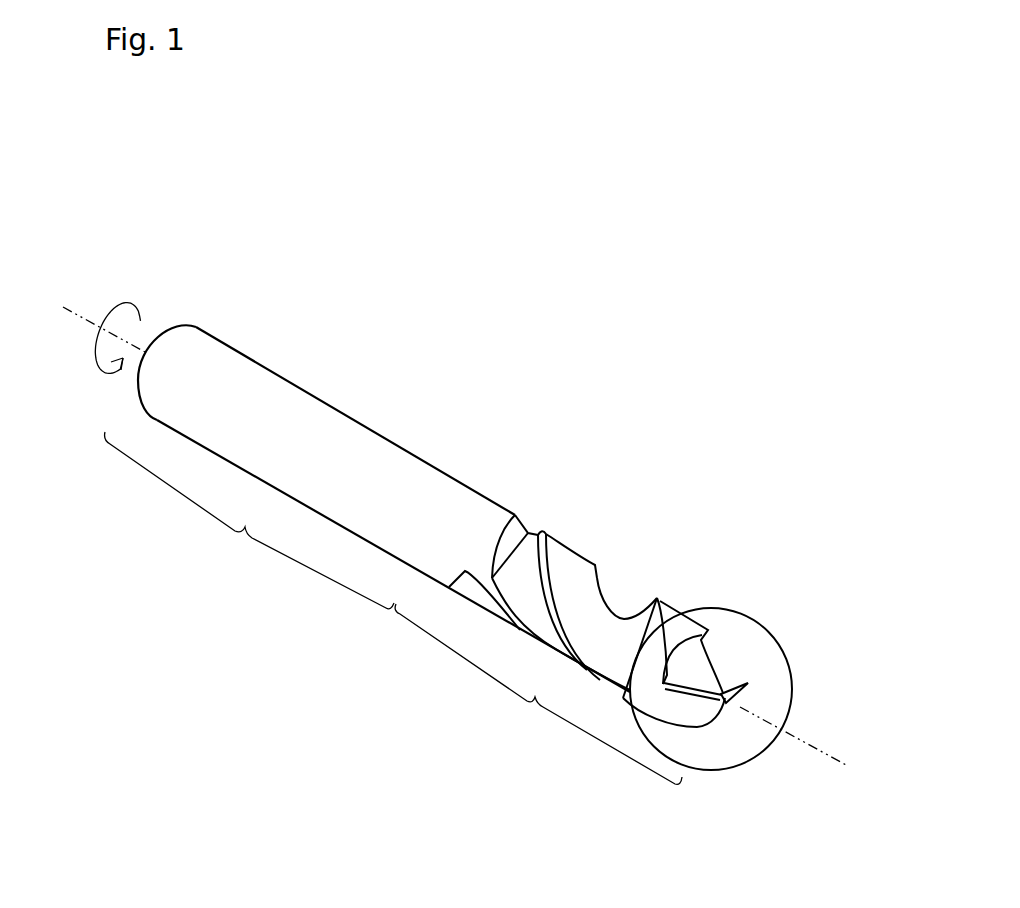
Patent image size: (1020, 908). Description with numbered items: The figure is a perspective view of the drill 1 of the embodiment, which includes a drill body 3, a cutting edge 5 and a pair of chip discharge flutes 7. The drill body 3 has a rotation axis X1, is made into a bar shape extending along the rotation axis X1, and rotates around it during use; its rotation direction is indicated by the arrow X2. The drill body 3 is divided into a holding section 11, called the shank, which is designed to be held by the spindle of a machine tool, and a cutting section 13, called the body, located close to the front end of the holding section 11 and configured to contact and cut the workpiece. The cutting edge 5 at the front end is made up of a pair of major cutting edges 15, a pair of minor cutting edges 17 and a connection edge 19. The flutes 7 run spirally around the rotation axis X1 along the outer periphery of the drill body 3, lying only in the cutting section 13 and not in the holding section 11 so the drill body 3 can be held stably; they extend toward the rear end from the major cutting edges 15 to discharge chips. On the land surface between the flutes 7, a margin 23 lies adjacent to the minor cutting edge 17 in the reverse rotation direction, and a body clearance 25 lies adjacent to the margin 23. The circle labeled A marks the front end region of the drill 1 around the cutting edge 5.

The drill 1 is at (410, 328).
The drill body 3 is at (393, 608).
The holding section 11 is at (249, 520).
The cutting section 13 is at (538, 694).
The cutting edge 5 is at (690, 746).
The major cutting edge 15 is at (728, 690).
The minor cutting edge 17 is at (630, 693).
The connection edge 19 is at (724, 699).
The chip discharge flute 7 is at (530, 532).
The margin 23 is at (547, 528).
The body clearance 25 is at (573, 553).
The enlarged region A is at (667, 766).
The rotation axis X1 is at (457, 534).
The rotation direction X2 is at (122, 322).